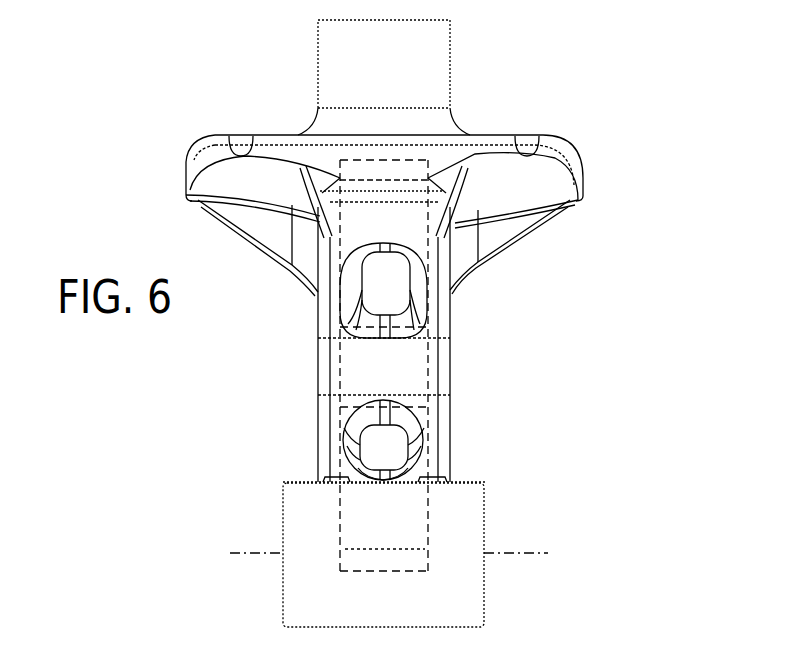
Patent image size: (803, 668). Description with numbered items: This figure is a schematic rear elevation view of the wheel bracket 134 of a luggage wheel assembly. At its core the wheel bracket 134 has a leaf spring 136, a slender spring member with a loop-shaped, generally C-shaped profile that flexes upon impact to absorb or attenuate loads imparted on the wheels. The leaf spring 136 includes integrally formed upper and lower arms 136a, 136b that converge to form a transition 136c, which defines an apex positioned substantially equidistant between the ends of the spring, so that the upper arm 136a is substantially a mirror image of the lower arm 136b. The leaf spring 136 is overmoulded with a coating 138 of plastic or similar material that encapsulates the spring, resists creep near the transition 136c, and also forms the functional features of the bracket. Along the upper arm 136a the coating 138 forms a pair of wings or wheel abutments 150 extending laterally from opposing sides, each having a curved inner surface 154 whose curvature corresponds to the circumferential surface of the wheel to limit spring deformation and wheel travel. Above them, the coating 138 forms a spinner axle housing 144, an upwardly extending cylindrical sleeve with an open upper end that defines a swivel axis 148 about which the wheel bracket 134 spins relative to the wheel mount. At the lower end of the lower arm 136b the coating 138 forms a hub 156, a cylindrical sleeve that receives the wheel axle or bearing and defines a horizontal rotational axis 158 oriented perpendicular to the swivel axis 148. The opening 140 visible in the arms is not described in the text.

The wheel bracket 134 is at (600, 52).
The leaf spring 136 is at (380, 287).
The upper arm 136a is at (358, 213).
The lower arm 136b is at (337, 467).
The transition 136c is at (352, 363).
The coating 138 is at (452, 368).
The opening 140 is at (428, 289).
The spinner axle housing 144 is at (452, 62).
The swivel axis 148 is at (385, 20).
The wheel abutments 150 is at (197, 157).
The curved inner surface 154 is at (224, 180).
The hub 156 is at (475, 597).
The rotational axis 158 is at (517, 553).